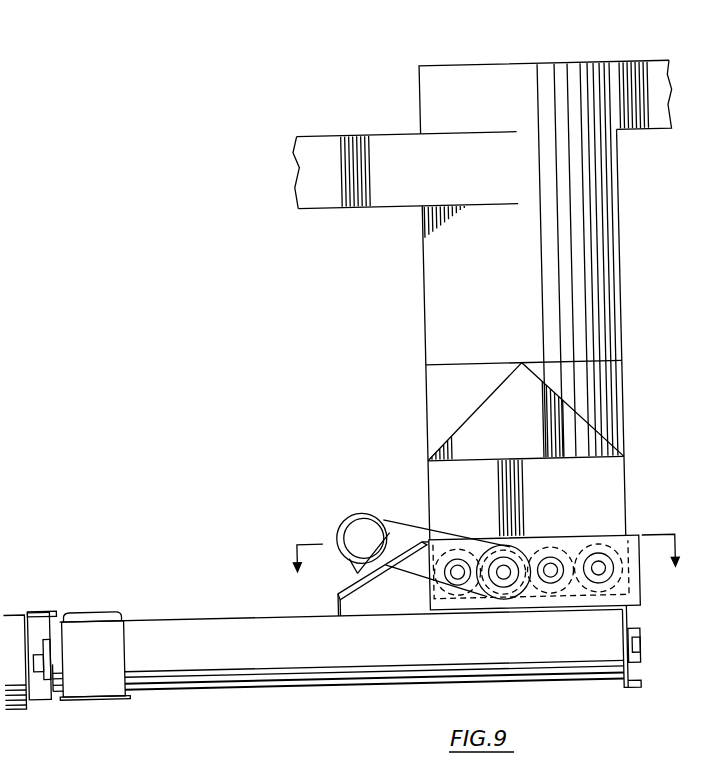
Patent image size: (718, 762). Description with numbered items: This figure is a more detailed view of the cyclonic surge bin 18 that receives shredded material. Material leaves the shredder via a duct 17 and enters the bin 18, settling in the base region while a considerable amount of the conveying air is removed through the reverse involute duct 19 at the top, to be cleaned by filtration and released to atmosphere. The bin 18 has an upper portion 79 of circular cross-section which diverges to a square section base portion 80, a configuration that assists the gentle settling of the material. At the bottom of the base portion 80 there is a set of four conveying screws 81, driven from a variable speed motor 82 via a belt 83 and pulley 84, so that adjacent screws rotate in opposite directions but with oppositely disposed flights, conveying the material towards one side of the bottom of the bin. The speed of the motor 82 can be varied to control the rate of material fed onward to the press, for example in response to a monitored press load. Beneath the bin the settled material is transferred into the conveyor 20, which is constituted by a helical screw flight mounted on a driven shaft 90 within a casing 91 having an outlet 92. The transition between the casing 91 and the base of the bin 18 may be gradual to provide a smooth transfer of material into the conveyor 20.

The duct 17 is at (332, 133).
The cyclonic surge bin 18 is at (428, 270).
The reverse involute duct 19 is at (648, 67).
The conveyor 20 is at (177, 613).
The upper portion 79 is at (603, 248).
The base portion 80 is at (625, 505).
The conveying screws 81 is at (573, 543).
The variable speed motor 82 is at (350, 528).
The belt 83 is at (399, 519).
The pulley 84 is at (511, 547).
The driven shaft 90 is at (25, 656).
The casing 91 is at (243, 676).
The outlet 92 is at (100, 693).